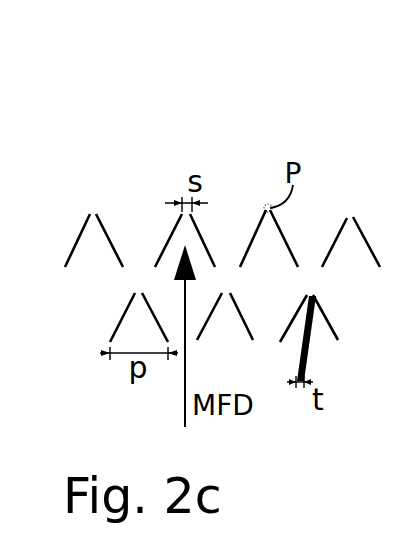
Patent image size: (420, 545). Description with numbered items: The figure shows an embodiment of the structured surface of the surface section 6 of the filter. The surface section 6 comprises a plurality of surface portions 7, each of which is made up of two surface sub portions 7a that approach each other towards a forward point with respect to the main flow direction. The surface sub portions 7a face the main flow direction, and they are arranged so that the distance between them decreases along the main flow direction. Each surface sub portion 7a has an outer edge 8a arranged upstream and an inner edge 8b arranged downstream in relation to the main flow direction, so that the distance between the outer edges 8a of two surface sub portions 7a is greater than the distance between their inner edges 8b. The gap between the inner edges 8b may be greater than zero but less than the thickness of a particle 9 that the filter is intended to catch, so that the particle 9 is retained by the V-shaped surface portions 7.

The surface section 6 is at (240, 155).
The surface portion 7 is at (142, 254).
The surface sub portion 7a is at (336, 238).
The outer edge 8a is at (96, 334).
The inner edge 8b is at (117, 298).
The particle 9 is at (308, 361).